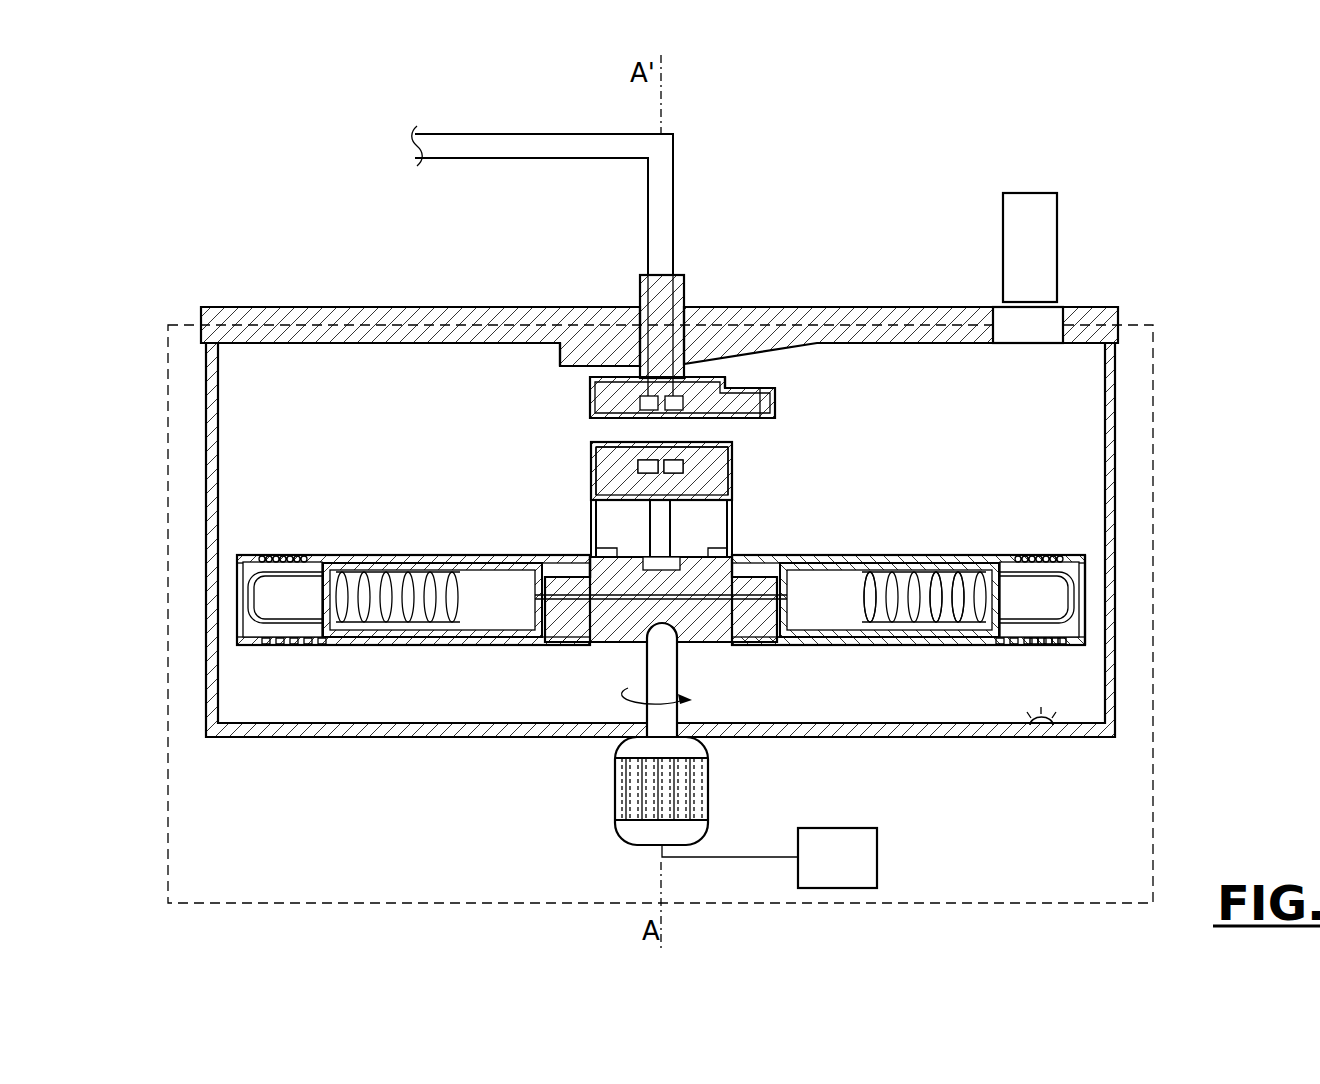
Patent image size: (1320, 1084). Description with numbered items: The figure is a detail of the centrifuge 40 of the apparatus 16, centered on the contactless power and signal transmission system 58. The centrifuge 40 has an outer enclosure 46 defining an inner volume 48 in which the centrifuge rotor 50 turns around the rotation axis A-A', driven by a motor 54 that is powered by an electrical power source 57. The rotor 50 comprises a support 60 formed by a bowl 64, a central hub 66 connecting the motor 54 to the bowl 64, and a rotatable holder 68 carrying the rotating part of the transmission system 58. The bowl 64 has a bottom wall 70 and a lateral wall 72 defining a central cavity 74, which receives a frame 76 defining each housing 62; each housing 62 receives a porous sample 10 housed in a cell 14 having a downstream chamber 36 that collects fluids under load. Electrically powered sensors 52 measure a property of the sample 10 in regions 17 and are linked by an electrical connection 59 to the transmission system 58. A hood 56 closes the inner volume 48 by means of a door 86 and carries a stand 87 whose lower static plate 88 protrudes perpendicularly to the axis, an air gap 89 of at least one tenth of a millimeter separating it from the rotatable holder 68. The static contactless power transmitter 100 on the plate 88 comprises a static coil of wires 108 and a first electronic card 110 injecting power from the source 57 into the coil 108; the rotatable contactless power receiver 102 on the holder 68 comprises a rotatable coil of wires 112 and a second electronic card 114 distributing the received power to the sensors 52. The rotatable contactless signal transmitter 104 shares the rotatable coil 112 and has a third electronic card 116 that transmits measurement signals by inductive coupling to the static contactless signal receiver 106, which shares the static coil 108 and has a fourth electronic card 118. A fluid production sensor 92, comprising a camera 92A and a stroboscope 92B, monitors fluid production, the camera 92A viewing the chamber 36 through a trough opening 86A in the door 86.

The porous sample 10 is at (373, 577).
The cell 14 is at (493, 628).
The apparatus 16 is at (1228, 407).
The regions of the porous sample 17 is at (962, 603).
The downstream chamber 36 is at (278, 605).
The centrifuge 40 is at (679, 614).
The outer enclosure 46 is at (168, 463).
The inner volume 48 is at (1010, 465).
The centrifuge rotor 50 is at (556, 680).
The electrically powered sensors 52 is at (947, 593).
The motor 54 is at (647, 788).
The hood 56 is at (659, 291).
The electrical power source 57 is at (853, 873).
The contactless power and signal transmission system 58 is at (560, 418).
The electrical connection 59 is at (483, 593).
The support 60 is at (654, 602).
The housing 62 is at (537, 585).
The bowl 64 is at (1060, 660).
The central hub 66 is at (645, 489).
The rotatable holder 68 is at (712, 437).
The bottom wall 70 is at (898, 640).
The lateral wall 72 is at (1087, 612).
The central cavity 74 is at (837, 583).
The frame 76 is at (583, 577).
The door 86 is at (910, 343).
The trough opening 86A is at (1040, 318).
The stand 87 is at (727, 383).
The lower static plate 88 is at (665, 448).
The air gap 89 is at (776, 405).
The fluid production sensor 92 is at (1124, 456).
The camera 92A is at (1022, 208).
The stroboscope 92B is at (1040, 730).
The static contactless power transmitter 100 is at (795, 412).
The rotatable contactless power receiver 102 is at (715, 473).
The rotatable contactless signal transmitter 104 is at (596, 462).
The static contactless signal receiver 106 is at (577, 365).
The static coil of wires 108 is at (745, 418).
The first electronic card 110 is at (690, 405).
The rotatable coil of wires 112 is at (590, 444).
The second electronic card 114 is at (674, 474).
The third electronic card 116 is at (650, 474).
The fourth electronic card 118 is at (613, 370).